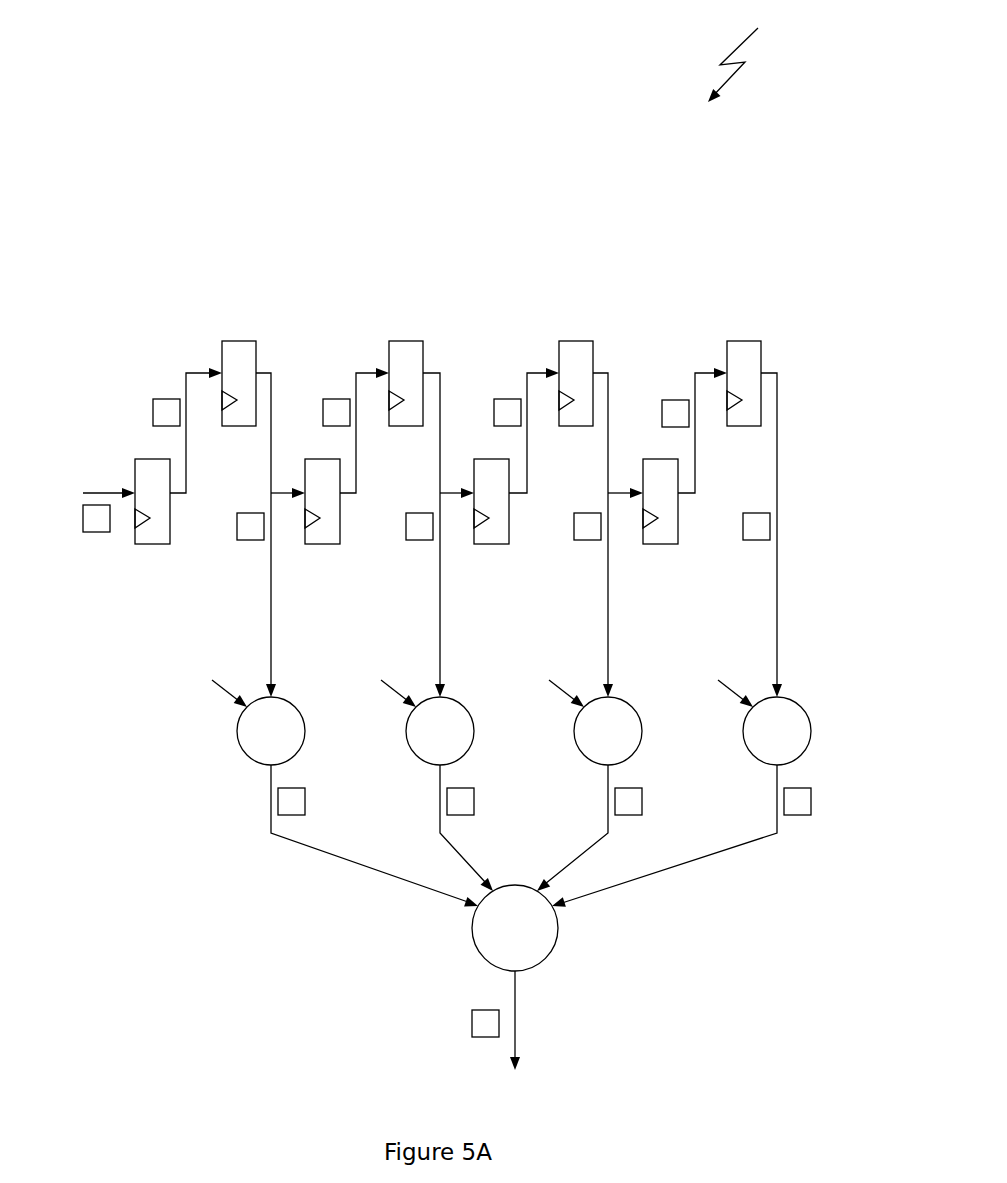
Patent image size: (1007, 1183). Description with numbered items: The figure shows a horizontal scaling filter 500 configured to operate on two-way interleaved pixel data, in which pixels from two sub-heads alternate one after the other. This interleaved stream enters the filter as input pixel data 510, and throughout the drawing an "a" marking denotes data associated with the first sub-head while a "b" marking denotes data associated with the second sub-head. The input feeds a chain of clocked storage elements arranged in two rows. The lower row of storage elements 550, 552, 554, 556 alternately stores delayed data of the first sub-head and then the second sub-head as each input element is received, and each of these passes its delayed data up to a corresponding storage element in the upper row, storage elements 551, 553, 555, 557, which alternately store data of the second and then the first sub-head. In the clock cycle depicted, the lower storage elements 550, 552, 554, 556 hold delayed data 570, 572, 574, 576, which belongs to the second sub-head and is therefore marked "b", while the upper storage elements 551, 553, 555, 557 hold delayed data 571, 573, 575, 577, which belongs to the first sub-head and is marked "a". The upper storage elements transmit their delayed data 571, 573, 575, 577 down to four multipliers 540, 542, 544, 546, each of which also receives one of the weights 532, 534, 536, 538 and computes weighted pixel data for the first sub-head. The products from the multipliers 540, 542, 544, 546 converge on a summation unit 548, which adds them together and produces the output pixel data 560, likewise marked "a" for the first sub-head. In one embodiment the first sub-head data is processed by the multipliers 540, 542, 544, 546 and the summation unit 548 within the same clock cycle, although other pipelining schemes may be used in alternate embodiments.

The horizontal scaling filter 500 is at (751, 55).
The input pixel data 510 is at (98, 491).
The weight 532 is at (218, 668).
The weight 534 is at (387, 668).
The weight 536 is at (555, 668).
The weight 538 is at (724, 668).
The multiplier 540 is at (242, 748).
The multiplier 542 is at (411, 748).
The multiplier 544 is at (579, 748).
The multiplier 546 is at (748, 748).
The summation unit 548 is at (475, 942).
The storage element 550 is at (157, 544).
The storage element 551 is at (243, 426).
The storage element 552 is at (327, 544).
The storage element 553 is at (410, 426).
The storage element 554 is at (496, 544).
The storage element 555 is at (580, 426).
The storage element 556 is at (665, 544).
The storage element 557 is at (748, 426).
The output pixel data 560 is at (516, 1021).
The delayed data 570 is at (186, 373).
The delayed data 571 is at (272, 370).
The delayed data 572 is at (356, 373).
The delayed data 573 is at (441, 370).
The delayed data 574 is at (527, 373).
The delayed data 575 is at (610, 370).
The delayed data 576 is at (695, 373).
The delayed data 577 is at (778, 370).